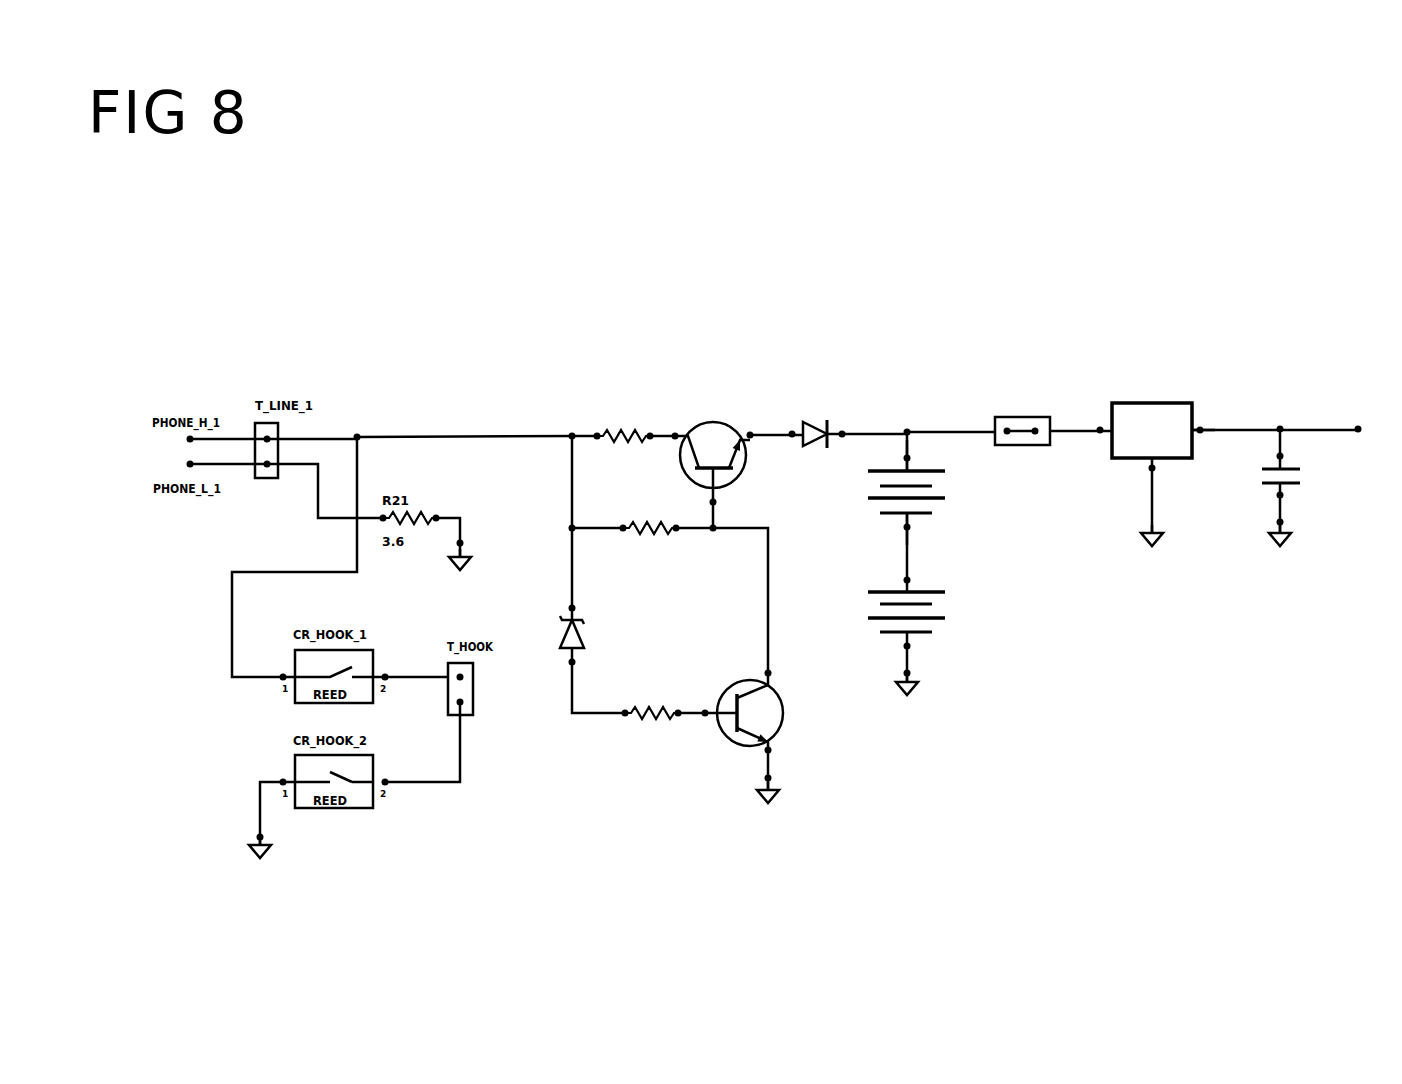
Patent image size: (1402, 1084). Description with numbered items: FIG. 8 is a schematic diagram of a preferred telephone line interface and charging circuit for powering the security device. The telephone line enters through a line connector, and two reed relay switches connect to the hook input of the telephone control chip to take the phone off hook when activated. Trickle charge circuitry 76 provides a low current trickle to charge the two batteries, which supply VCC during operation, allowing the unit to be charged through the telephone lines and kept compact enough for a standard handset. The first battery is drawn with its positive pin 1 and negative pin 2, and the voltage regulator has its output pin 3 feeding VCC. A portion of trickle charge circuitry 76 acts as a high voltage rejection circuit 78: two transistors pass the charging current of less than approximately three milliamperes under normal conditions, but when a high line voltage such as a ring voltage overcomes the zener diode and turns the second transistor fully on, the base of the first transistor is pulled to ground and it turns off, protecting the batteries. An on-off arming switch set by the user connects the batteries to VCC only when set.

The trickle charge circuitry 76 is at (1005, 204).
The high voltage rejection circuit 78 is at (627, 897).
The battery BAT1 positive pin 1 is at (913, 455).
The battery BAT1 negative pin 2 is at (913, 529).
The regulator Q4 output pin 3 is at (1203, 422).